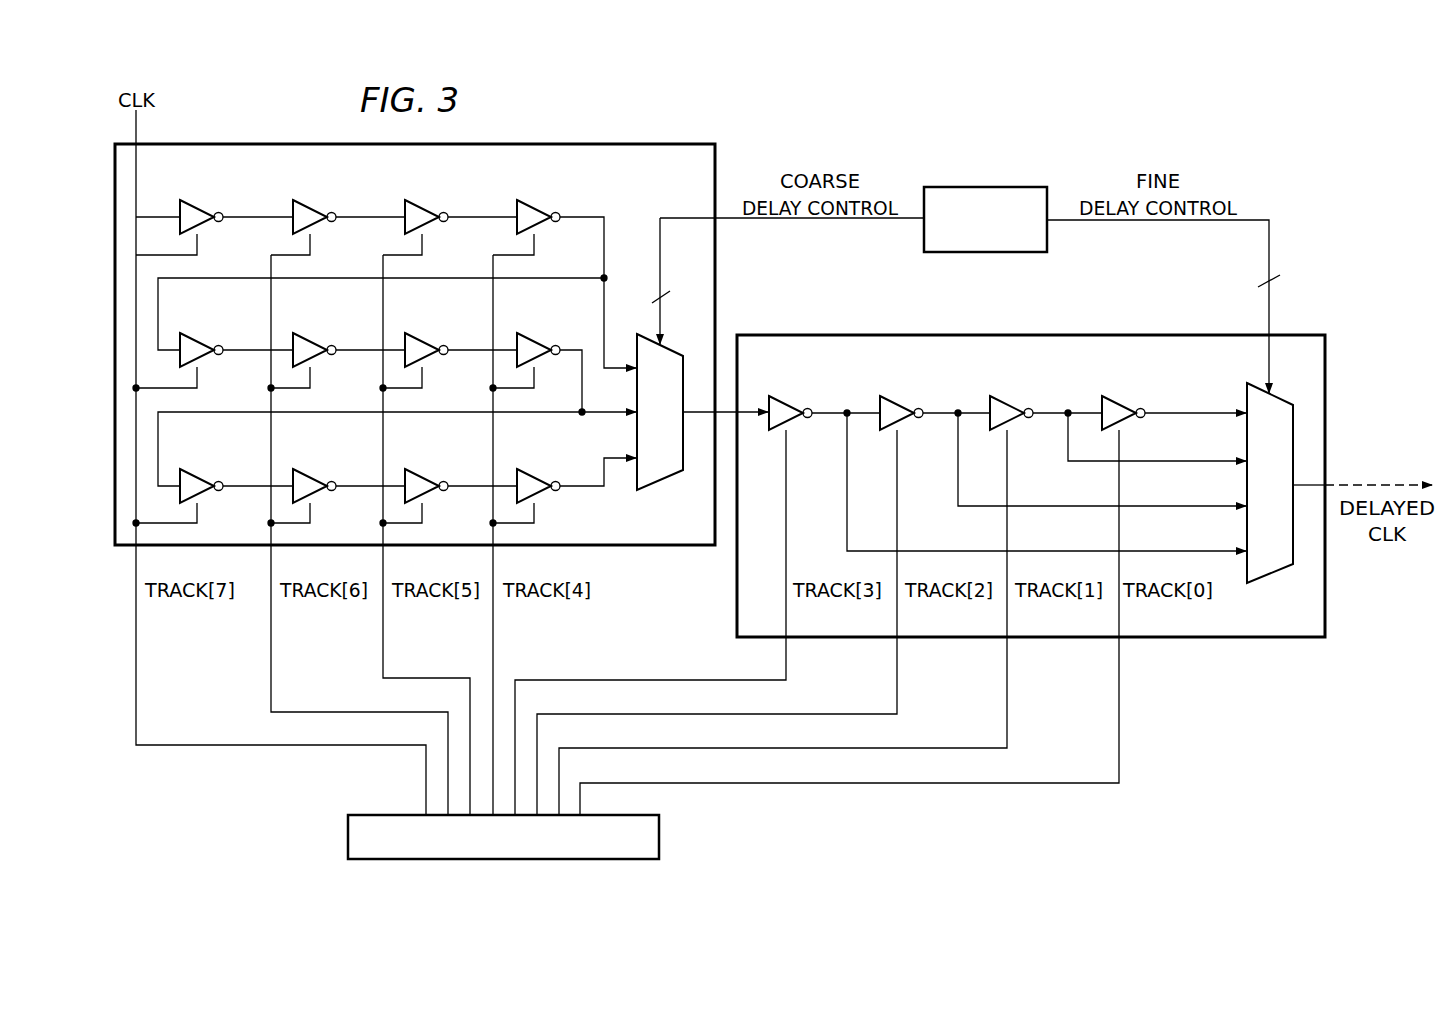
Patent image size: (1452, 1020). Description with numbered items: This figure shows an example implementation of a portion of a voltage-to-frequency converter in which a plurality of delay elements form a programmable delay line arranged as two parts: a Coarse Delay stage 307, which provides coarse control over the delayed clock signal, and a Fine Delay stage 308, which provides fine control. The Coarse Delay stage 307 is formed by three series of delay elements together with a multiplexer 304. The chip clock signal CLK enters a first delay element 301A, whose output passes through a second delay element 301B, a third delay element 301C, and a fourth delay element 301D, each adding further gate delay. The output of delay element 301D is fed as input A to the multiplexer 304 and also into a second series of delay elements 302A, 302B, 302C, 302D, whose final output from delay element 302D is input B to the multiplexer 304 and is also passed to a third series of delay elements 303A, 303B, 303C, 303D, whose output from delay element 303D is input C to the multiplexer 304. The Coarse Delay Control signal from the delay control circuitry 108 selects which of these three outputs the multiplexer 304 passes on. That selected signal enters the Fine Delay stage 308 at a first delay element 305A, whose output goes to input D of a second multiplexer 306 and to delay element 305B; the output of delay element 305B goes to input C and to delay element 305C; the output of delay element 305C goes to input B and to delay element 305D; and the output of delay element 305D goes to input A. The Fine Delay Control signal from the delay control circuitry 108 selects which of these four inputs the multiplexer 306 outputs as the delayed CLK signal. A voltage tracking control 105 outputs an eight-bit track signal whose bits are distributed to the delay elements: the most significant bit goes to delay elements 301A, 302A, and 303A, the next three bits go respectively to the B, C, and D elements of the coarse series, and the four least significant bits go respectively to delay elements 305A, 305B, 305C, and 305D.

The first delay element 301A is at (200, 207).
The second delay element 301B is at (313, 207).
The third delay element 301C is at (425, 207).
The fourth delay element 301D is at (537, 207).
The delay element 302A is at (200, 340).
The delay element 302B is at (313, 340).
The delay element 302C is at (425, 340).
The delay element 302D is at (537, 340).
The delay element 303A is at (200, 476).
The delay element 303B is at (313, 476).
The delay element 303C is at (425, 476).
The delay element 303D is at (537, 476).
The multiplexer 304 is at (662, 486).
The first delay element of Fine Delay stage 305A is at (789, 403).
The second delay element of Fine Delay stage 305B is at (900, 403).
The third delay element of Fine Delay stage 305C is at (1010, 403).
The fourth delay element of Fine Delay stage 305D is at (1122, 403).
The multiplexer 306 is at (1270, 578).
The Coarse Delay stage 307 is at (257, 141).
The Fine Delay stage 308 is at (1204, 641).
The delay control circuitry 108 is at (985, 187).
The voltage tracking control 105 is at (348, 835).